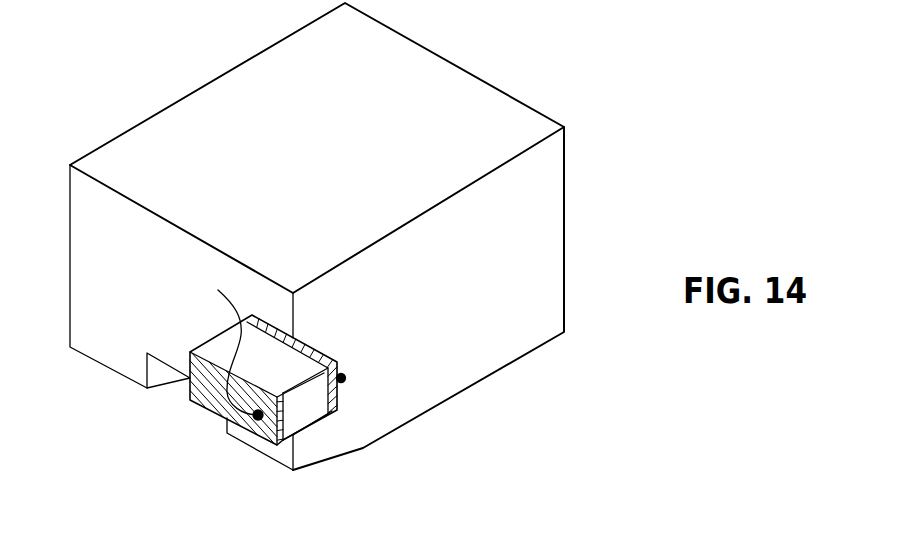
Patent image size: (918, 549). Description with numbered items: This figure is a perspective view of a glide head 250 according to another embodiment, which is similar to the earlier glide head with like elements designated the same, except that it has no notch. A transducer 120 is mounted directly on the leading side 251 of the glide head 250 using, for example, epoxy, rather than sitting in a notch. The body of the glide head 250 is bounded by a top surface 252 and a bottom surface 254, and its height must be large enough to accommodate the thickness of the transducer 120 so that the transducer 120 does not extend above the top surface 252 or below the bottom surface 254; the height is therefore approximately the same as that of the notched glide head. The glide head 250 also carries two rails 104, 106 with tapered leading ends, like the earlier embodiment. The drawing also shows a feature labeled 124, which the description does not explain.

The glide head 250 is at (170, 57).
The leading side 251 is at (95, 257).
The top surface 252 is at (464, 93).
The bottom surface 254 is at (462, 390).
The rail 104 is at (83, 345).
The rail 106 is at (278, 452).
The transducer 120 is at (310, 427).
The contact pin 124 is at (342, 378).